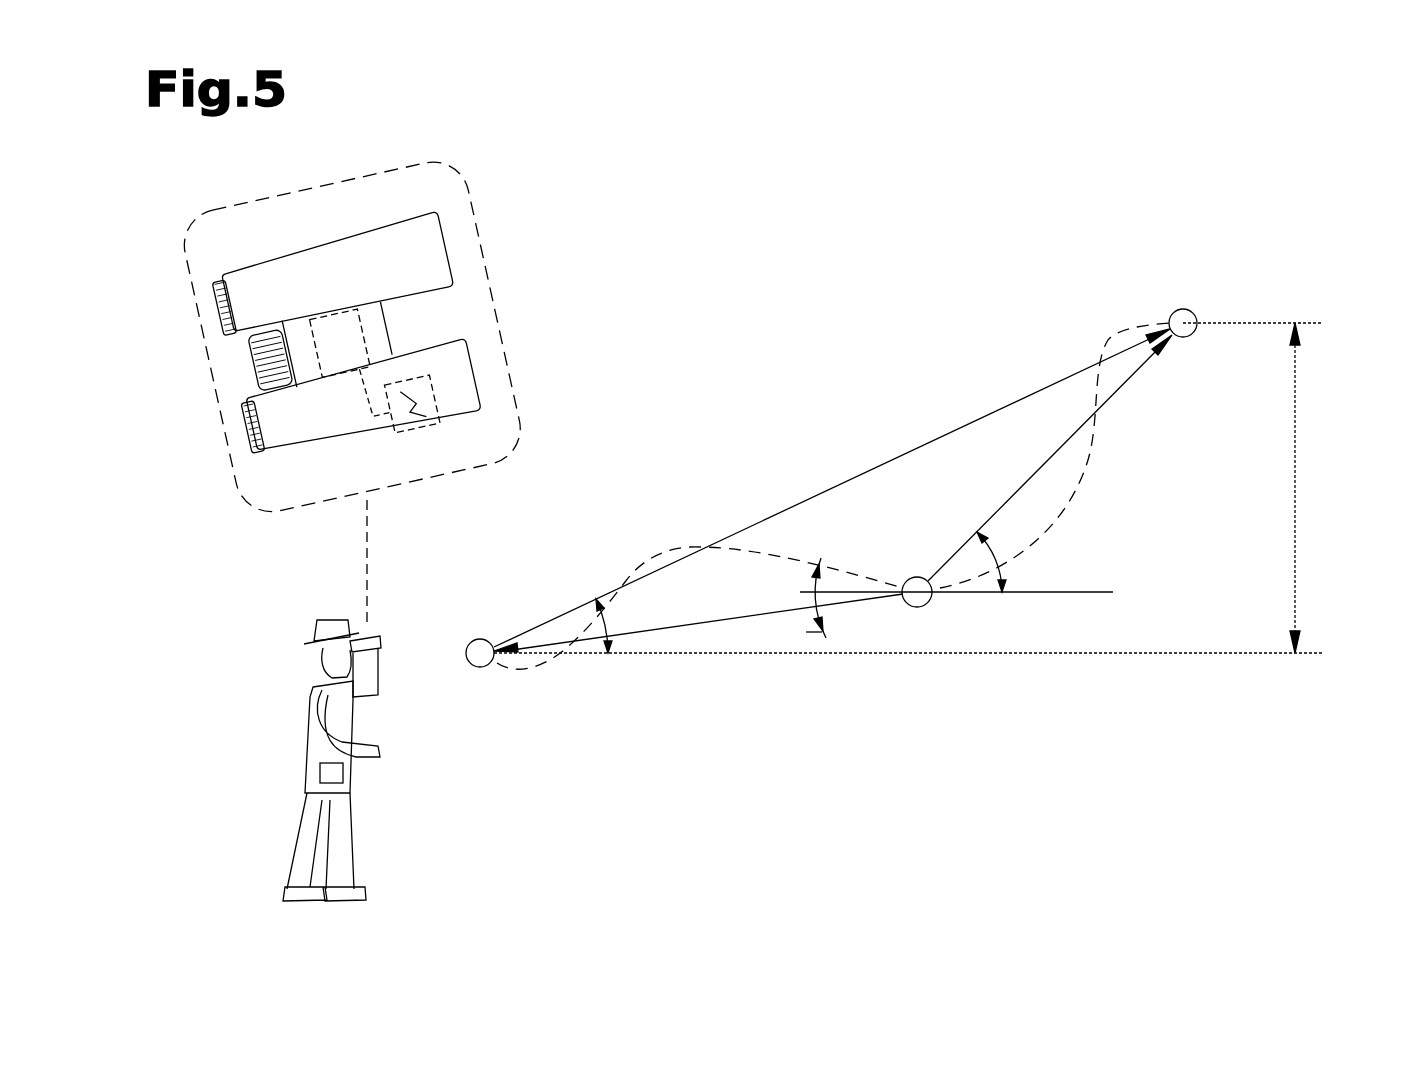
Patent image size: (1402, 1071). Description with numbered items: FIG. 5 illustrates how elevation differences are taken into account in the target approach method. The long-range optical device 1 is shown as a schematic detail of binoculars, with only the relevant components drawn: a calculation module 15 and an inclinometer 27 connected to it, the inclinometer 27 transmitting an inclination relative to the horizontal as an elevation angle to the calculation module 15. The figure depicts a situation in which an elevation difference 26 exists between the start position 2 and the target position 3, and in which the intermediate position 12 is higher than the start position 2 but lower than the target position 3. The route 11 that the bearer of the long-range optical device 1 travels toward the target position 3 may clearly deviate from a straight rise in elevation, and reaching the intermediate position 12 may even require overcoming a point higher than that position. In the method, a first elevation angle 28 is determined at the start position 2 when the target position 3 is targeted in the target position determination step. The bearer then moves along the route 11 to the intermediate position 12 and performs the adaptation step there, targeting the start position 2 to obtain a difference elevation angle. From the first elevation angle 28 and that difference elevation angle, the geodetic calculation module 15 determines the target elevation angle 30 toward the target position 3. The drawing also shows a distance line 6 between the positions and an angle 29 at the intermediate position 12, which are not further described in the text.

The long-range optical device 1 is at (517, 196).
The start position 2 is at (491, 689).
The target position 3 is at (1189, 287).
The distance line D1 6 is at (920, 443).
The route 11 is at (676, 540).
The intermediate position 12 is at (930, 615).
The calculation module 15 is at (363, 333).
The elevation difference 26 is at (1306, 457).
The inclinometer 27 is at (415, 403).
The first elevation angle 28 is at (600, 603).
The angle at P_I 29 is at (813, 640).
The target elevation angle 30 is at (993, 546).